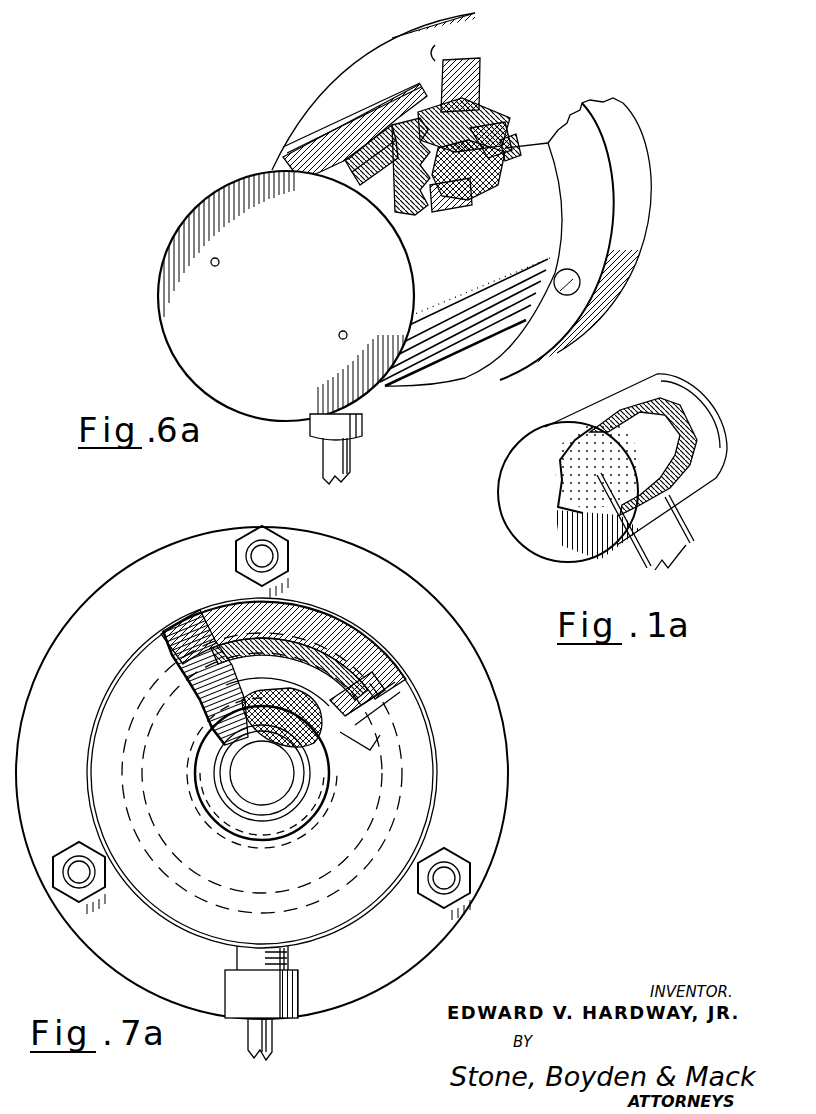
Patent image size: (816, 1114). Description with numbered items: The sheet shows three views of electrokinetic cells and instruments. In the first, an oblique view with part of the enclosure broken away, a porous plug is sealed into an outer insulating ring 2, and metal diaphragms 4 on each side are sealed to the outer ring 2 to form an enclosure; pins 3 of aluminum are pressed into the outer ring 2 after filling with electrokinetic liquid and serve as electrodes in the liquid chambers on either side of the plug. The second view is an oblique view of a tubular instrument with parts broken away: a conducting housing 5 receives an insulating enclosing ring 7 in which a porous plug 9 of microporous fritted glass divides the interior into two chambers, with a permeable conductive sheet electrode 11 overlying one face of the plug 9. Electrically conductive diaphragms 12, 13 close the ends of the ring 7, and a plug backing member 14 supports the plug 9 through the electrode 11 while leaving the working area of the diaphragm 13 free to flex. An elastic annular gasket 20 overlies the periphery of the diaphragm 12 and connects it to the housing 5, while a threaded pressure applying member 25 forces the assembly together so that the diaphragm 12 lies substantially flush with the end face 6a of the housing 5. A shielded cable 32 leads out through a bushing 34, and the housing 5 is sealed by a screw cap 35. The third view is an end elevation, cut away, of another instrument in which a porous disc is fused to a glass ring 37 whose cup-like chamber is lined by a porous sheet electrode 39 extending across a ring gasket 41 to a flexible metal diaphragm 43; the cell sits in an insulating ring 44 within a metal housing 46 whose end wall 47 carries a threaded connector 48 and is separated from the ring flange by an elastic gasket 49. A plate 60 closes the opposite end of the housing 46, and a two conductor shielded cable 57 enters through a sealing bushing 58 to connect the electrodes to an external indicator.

In FIG. 6A, the housing 5 is at (295, 140).
In FIG. 6A, the pressure applying member 25 is at (357, 157).
In FIG. 6A, the insulating enclosing ring 7 is at (480, 78).
In FIG. 6A, the elastic annular gasket 20 is at (490, 112).
In FIG. 6A, the electrically conductive diaphragm 12 is at (500, 137).
In FIG. 6A, the permeable conductive sheet electrode 11 is at (502, 157).
In FIG. 6A, the porous plug 9 is at (497, 168).
In FIG. 6A, the plug backing member 14 is at (453, 203).
In FIG. 6A, the electrically conductive diaphragm 13 is at (422, 213).
In FIG. 6A, the end face of the housing 6a is at (638, 132).
In FIG. 6A, the screw cap 35 is at (160, 311).
In FIG. 6A, the bushing 34 is at (362, 421).
In FIG. 6A, the shielded cable 32 is at (351, 459).
In FIG. 1A, the outer insulating ring 2 is at (597, 398).
In FIG. 1A, the metal diaphragms 4 is at (507, 468).
In FIG. 1A, the pins 3 is at (645, 537).
In FIG. 7A, the plate 60 is at (507, 745).
In FIG. 7A, the metal housing 46 is at (438, 811).
In FIG. 7A, the end wall 47 is at (343, 862).
In FIG. 7A, the threaded connector 48 is at (280, 830).
In FIG. 7A, the flexible metal diaphragm 43 is at (274, 789).
In FIG. 7A, the insulating ring 44 is at (308, 640).
In FIG. 7A, the glass ring 37 is at (254, 662).
In FIG. 7A, the ring gasket 41 is at (250, 660).
In FIG. 7A, the porous sheet electrode 39 is at (296, 712).
In FIG. 7A, the elastic gasket 49 is at (377, 688).
In FIG. 7A, the sealing bushing 58 is at (298, 1013).
In FIG. 7A, the two conductor shielded cable 57 is at (276, 1038).